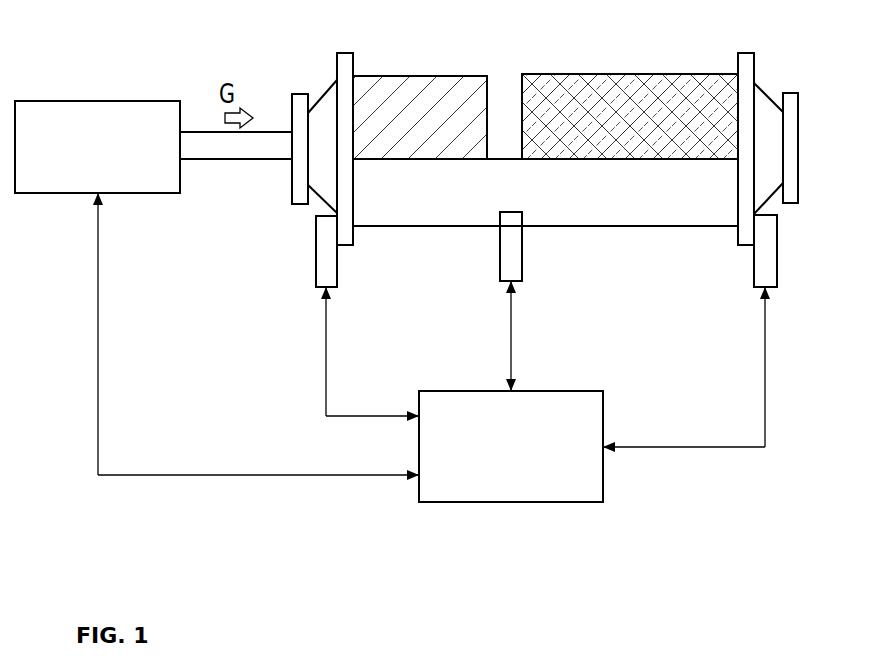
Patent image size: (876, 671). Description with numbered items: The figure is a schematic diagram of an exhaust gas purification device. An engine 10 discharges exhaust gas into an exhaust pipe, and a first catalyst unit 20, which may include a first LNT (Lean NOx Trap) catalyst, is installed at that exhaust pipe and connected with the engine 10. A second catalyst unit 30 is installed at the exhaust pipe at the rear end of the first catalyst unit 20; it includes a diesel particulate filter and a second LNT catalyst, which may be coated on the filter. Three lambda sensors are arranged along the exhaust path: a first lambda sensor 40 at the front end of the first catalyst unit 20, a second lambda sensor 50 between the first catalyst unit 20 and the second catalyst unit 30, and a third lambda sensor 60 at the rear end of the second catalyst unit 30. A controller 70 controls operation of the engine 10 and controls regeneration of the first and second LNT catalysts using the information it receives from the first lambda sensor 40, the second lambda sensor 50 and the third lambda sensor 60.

The engine 10 is at (143, 101).
The first catalyst unit 20 is at (448, 76).
The second catalyst unit 30 is at (678, 74).
The first lambda sensor 40 is at (337, 268).
The second lambda sensor 50 is at (522, 262).
The third lambda sensor 60 is at (777, 269).
The controller 70 is at (565, 502).